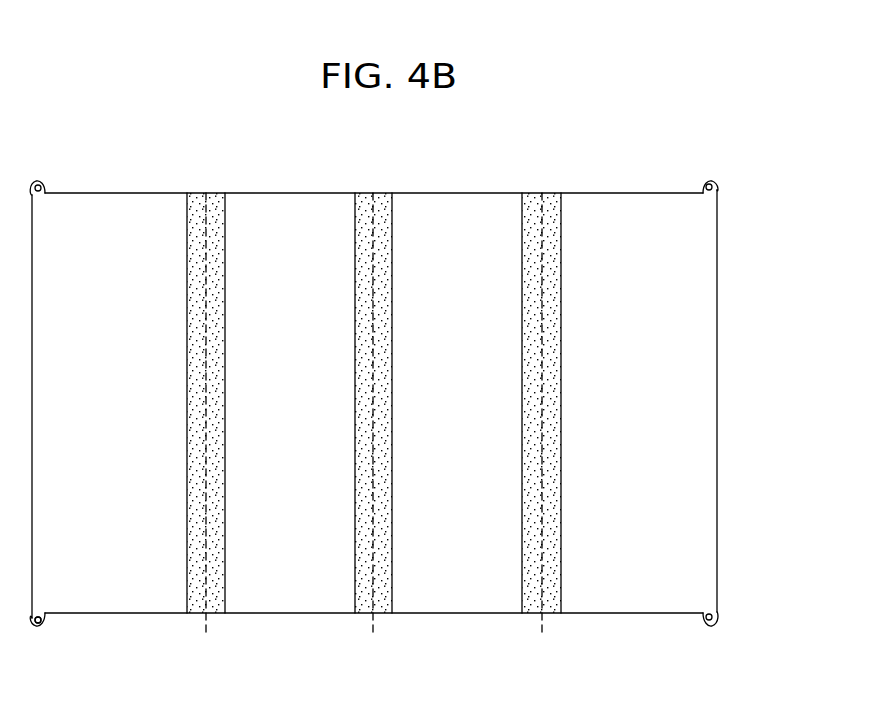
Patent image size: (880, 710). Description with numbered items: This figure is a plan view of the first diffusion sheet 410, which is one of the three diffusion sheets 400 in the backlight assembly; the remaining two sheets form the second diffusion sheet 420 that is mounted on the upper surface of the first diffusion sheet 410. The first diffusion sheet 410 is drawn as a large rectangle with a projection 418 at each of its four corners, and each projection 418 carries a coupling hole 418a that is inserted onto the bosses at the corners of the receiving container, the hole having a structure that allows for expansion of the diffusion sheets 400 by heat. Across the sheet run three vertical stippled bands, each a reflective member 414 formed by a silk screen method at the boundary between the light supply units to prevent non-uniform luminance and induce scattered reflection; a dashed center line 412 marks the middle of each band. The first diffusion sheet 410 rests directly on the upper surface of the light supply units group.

The diffusion sheets 400 is at (417, 387).
The first diffusion sheet 410 is at (706, 338).
The folding line 412 is at (545, 624).
The reflective member 414 is at (552, 414).
The projection 418 is at (721, 188).
The coupling hole 418a is at (42, 625).
The second diffusion sheet 420 is at (498, 200).